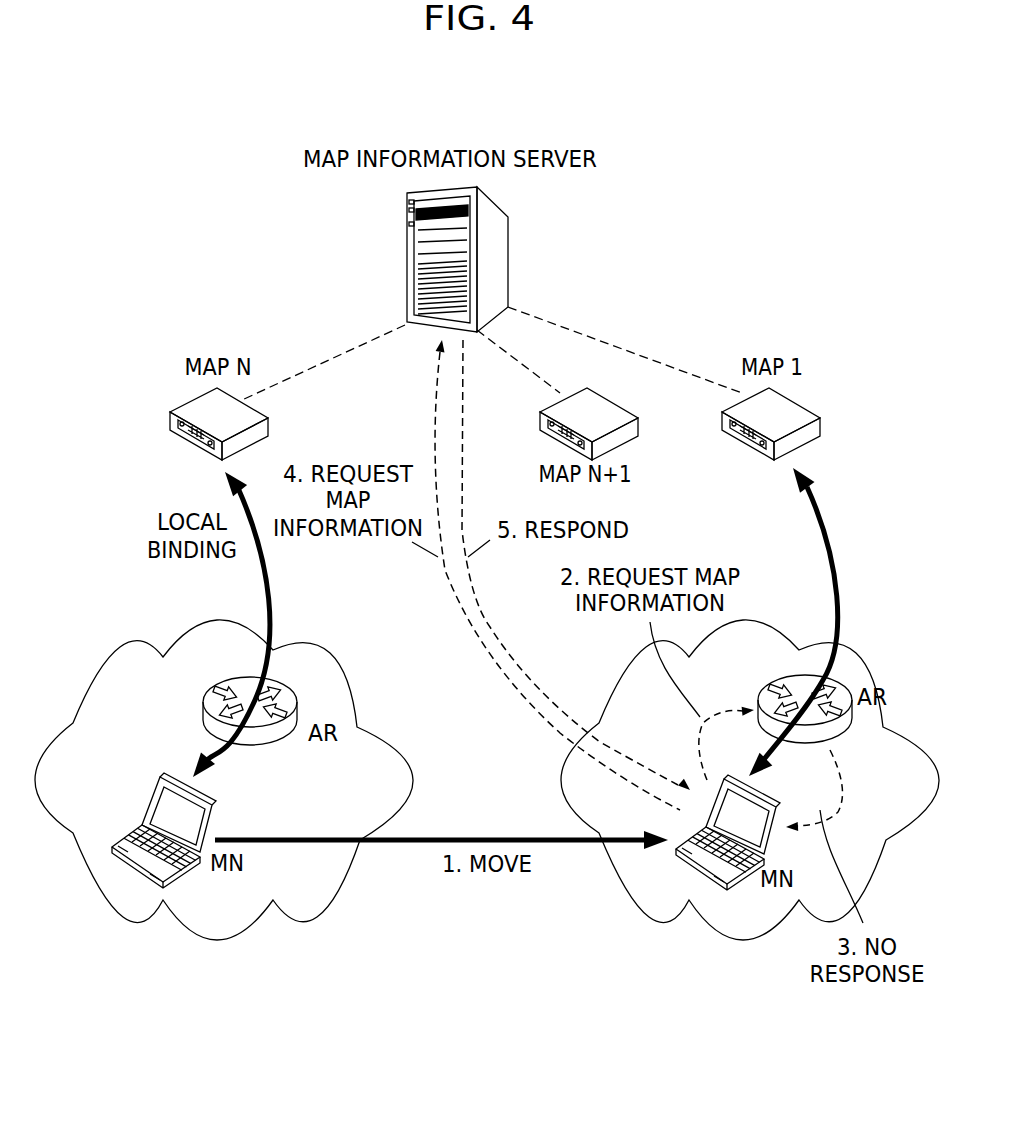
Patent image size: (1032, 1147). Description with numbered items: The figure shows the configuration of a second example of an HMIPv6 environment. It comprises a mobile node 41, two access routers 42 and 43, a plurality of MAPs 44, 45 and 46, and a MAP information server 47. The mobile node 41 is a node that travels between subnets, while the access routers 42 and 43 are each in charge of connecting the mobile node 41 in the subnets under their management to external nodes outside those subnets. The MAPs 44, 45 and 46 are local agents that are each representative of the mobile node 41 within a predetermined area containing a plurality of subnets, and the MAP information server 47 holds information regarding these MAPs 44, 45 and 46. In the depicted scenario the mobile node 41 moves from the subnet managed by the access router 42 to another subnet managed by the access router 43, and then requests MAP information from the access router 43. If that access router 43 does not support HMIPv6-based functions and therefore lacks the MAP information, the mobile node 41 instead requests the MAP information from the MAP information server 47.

The mobile node 41 is at (217, 815).
The access router 42 is at (297, 703).
The access router 43 is at (768, 682).
The MAP 44 is at (805, 405).
The MAP 45 is at (625, 405).
The MAP 46 is at (187, 405).
The MAP information server 47 is at (508, 225).